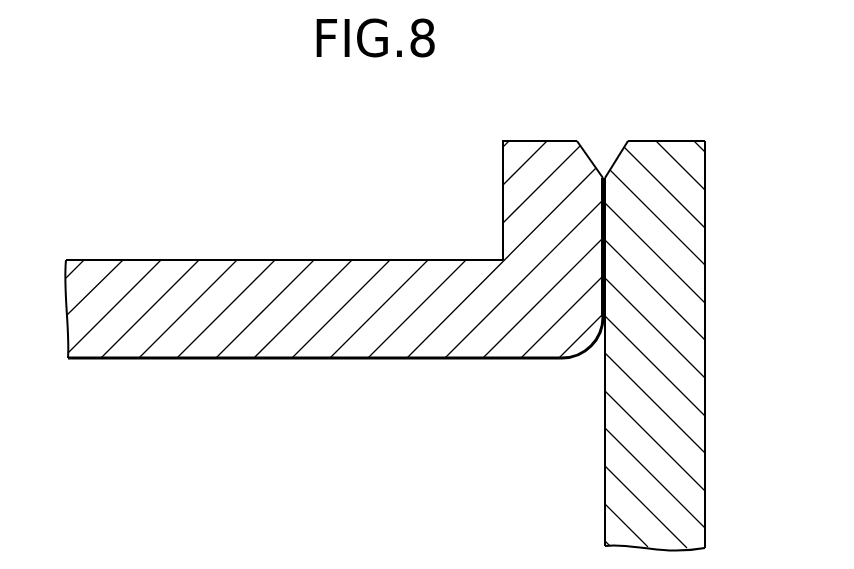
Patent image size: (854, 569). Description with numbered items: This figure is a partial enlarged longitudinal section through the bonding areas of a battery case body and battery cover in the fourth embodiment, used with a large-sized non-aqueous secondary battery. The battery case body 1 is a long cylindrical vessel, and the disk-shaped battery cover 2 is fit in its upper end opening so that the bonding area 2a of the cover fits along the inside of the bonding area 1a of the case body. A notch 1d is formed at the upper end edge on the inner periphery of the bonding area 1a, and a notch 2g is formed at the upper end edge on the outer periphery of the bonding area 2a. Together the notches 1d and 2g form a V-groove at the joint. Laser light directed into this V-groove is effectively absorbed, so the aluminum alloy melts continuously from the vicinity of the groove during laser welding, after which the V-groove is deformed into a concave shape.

The battery case body 1 is at (738, 393).
The bonding area of battery case body 1a is at (697, 233).
The notch of battery case body 1d is at (617, 150).
The battery cover 2 is at (251, 240).
The bonding area of battery cover 2a is at (512, 166).
The notch of battery cover 2g is at (590, 150).